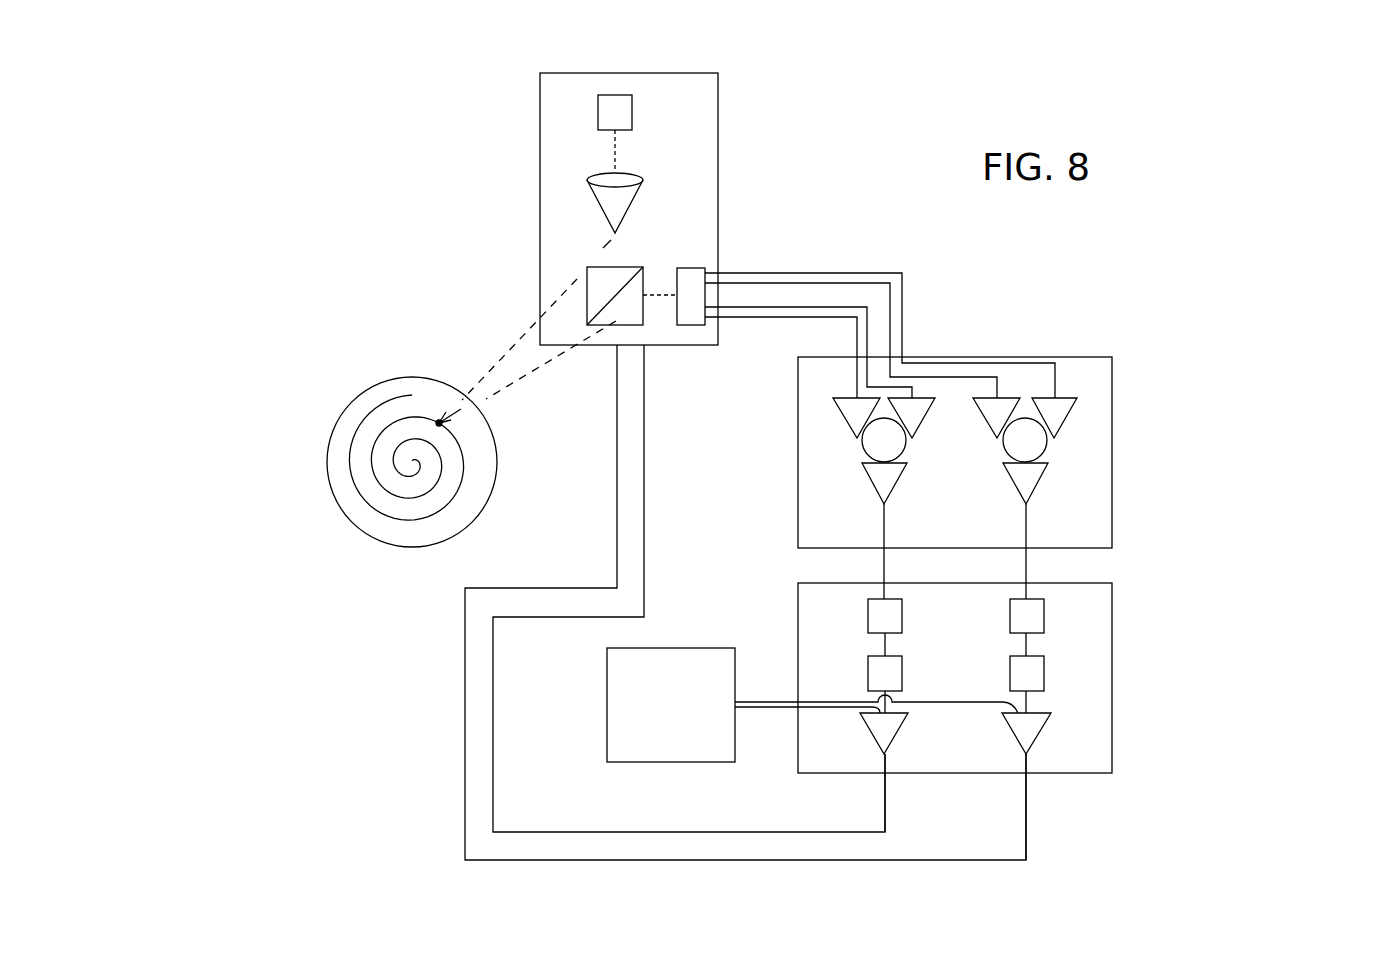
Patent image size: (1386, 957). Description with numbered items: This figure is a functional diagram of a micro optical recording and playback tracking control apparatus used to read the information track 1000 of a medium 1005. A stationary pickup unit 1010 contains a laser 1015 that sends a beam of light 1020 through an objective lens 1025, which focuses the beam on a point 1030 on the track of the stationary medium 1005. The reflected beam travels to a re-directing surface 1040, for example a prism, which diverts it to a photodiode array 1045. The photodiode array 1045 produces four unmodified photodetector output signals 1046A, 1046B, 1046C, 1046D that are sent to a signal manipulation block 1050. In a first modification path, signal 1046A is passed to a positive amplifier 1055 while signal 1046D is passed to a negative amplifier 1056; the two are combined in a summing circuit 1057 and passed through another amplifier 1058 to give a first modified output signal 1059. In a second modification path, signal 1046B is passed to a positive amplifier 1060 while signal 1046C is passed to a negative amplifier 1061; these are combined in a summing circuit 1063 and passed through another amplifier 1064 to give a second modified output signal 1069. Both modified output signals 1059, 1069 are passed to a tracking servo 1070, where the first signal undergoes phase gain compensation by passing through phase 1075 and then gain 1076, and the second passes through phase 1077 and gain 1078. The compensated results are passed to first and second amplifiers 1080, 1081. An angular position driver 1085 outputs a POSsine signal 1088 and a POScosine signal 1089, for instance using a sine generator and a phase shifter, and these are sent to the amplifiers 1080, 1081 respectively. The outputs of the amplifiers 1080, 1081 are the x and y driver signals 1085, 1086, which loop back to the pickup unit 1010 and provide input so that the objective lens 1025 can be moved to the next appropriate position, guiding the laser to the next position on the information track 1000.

The stationary pickup unit 1010 is at (573, 73).
The laser 1015 is at (632, 113).
The beam of light 1020 is at (613, 153).
The objective lens 1025 is at (638, 178).
The re-directing surface 1040 is at (643, 267).
The photodiode array 1045 is at (692, 268).
The unmodified photodetector output signal 1046A is at (902, 294).
The unmodified photodetector output signal 1046B is at (867, 322).
The unmodified photodetector output signal 1046C is at (857, 346).
The unmodified photodetector output signal 1046D is at (890, 305).
The medium 1005 is at (360, 393).
The information track 1000 is at (345, 448).
The point 1030 is at (441, 424).
The signal manipulation block 1050 is at (970, 357).
The positive amplifier 1055 is at (1064, 400).
The negative amplifier 1056 is at (1003, 398).
The summing circuit 1057 is at (1045, 452).
The amplifier 1058 is at (1038, 483).
The first modified output signal 1059 is at (1030, 530).
The positive amplifier 1060 is at (923, 420).
The negative amplifier 1061 is at (843, 422).
The summing circuit 1063 is at (862, 452).
The amplifier 1064 is at (870, 494).
The second modified output signal 1069 is at (887, 530).
The tracking servo 1070 is at (1080, 583).
The phase 1075 is at (1043, 617).
The gain 1076 is at (1043, 675).
The phase 1077 is at (868, 617).
The gain 1078 is at (868, 675).
The first amplifier 1080 is at (873, 735).
The second amplifier 1081 is at (1040, 735).
The angular position driver 1085 is at (607, 667).
The y driver signal 1086 is at (1028, 810).
The POSsine signal 1088 is at (787, 702).
The POScosine signal 1089 is at (787, 708).